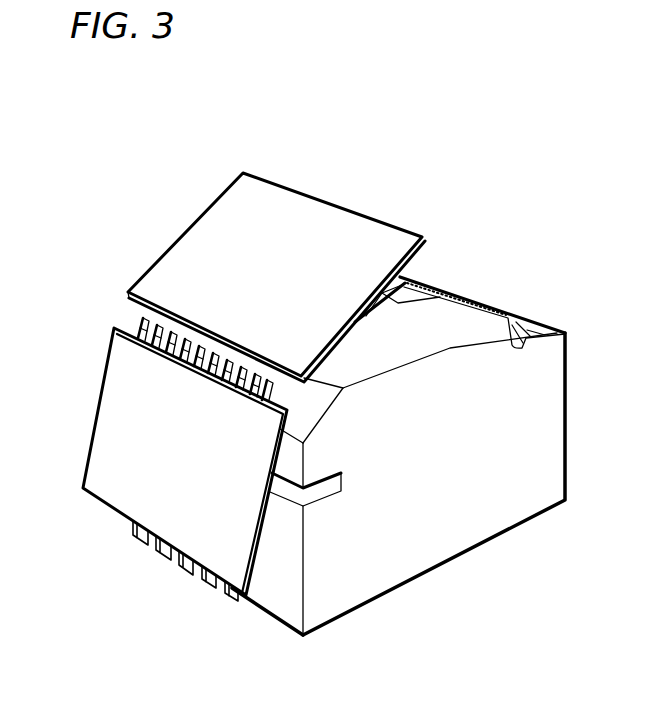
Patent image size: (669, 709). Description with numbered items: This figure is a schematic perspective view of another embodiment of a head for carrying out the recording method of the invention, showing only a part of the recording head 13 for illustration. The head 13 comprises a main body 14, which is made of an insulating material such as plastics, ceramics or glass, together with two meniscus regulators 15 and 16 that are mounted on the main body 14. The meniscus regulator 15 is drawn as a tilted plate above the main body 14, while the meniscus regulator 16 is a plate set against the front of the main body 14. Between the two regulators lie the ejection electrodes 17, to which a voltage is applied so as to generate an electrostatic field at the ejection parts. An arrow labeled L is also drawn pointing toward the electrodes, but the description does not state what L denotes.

The recording head 13 is at (289, 164).
The main body 14 is at (450, 500).
The meniscus regulator 15 is at (357, 232).
The meniscus regulator 16 is at (117, 463).
The ejection electrodes 17 is at (247, 347).
The length direction L is at (175, 284).